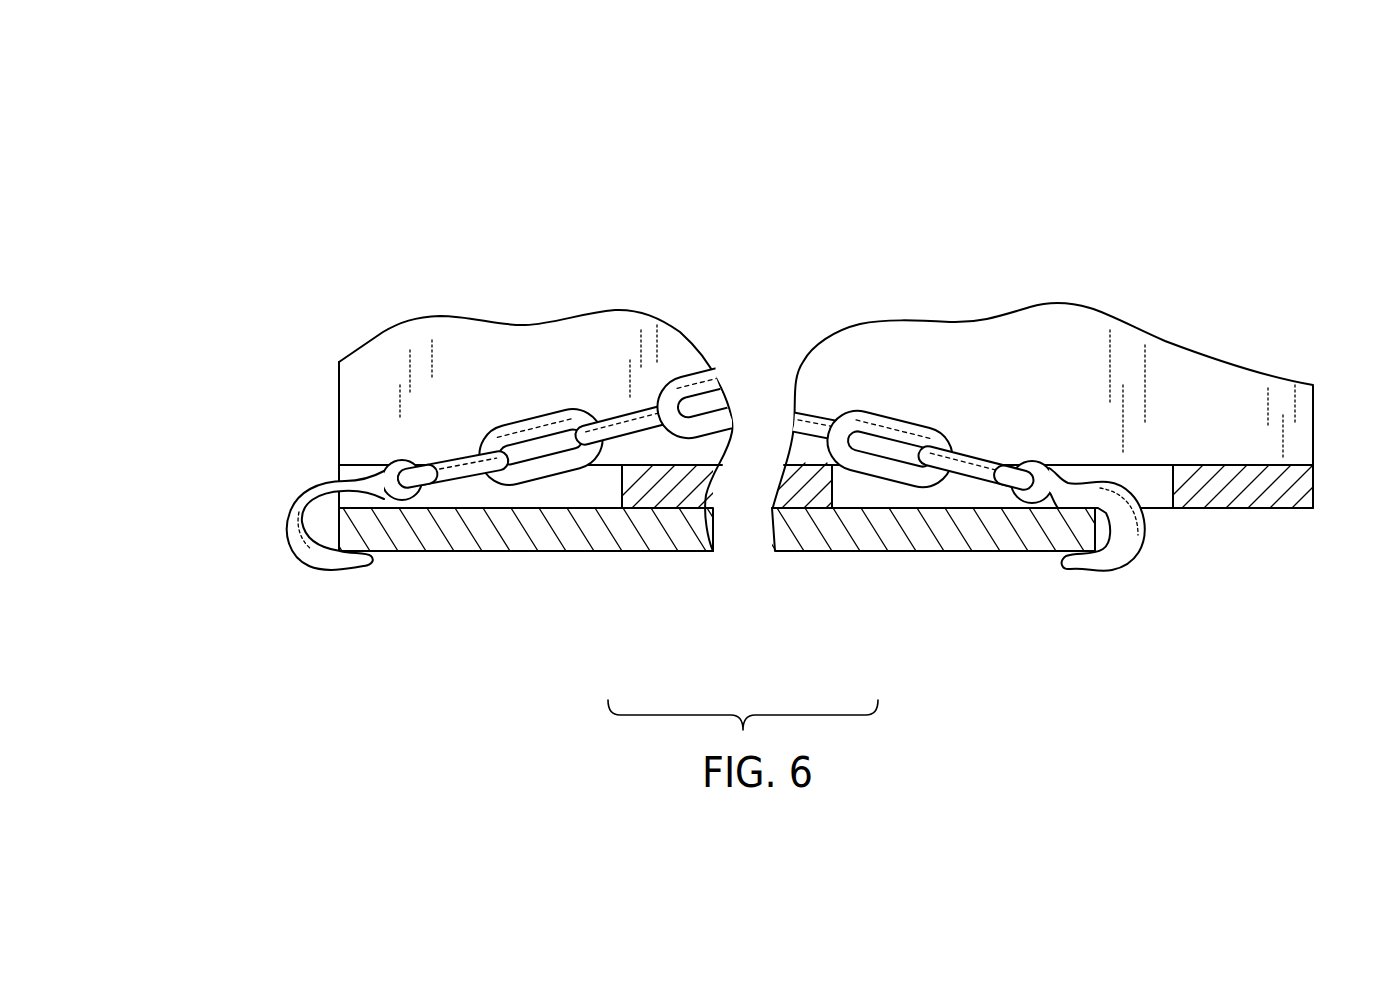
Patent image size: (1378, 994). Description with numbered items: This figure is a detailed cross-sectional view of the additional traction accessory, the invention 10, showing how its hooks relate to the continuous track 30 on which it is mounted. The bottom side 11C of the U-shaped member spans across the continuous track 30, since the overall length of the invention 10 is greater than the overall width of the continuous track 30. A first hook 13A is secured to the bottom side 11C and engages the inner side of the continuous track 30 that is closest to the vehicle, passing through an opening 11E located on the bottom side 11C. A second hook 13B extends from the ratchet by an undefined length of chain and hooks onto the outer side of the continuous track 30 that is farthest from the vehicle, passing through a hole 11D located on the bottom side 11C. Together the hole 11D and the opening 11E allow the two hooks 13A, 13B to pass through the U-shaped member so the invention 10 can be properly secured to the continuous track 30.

The invention 10 is at (510, 185).
The continuous track 30 is at (410, 535).
The bottom side 11C is at (1240, 467).
The hole 11D is at (1098, 403).
The opening 11E is at (357, 478).
The first hook 13A is at (366, 483).
The second hook 13B is at (1117, 569).